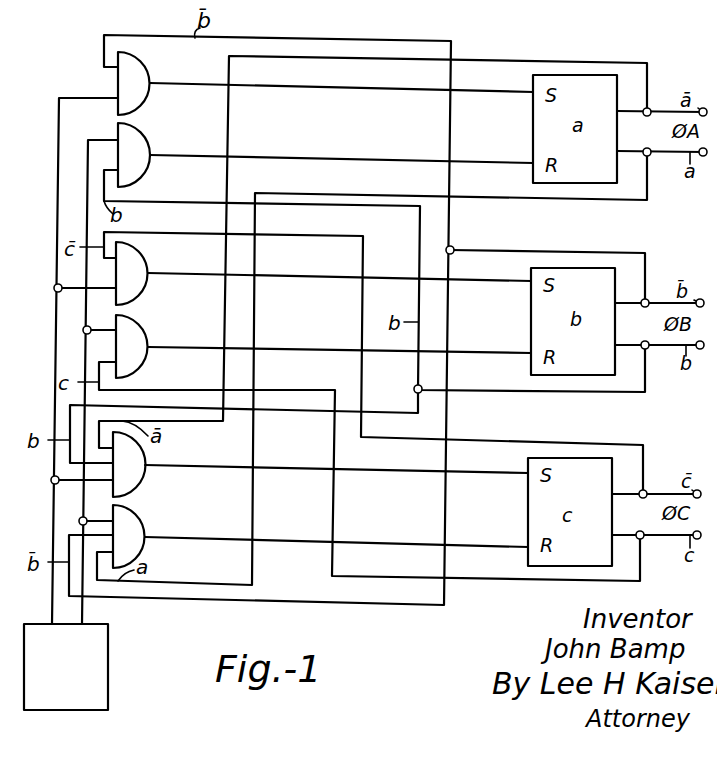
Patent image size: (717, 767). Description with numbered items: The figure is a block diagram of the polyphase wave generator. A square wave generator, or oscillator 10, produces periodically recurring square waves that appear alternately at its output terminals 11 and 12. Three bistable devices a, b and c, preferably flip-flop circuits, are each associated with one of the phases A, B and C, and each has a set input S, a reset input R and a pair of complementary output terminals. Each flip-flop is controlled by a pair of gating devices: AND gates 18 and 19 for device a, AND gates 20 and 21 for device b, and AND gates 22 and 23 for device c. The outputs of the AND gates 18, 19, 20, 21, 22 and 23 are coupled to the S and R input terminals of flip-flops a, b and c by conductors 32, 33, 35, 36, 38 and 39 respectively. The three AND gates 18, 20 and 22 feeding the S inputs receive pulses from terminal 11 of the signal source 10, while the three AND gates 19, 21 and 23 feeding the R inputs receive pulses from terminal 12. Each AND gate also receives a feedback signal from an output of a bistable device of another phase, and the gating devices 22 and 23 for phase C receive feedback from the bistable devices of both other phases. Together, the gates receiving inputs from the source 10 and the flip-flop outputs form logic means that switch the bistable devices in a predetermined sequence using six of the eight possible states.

The square wave generator 10 is at (82, 675).
The output terminal 11 is at (50, 623).
The output terminal 12 is at (85, 623).
The AND gate 18 is at (148, 70).
The AND gate 19 is at (146, 142).
The AND gate 20 is at (145, 262).
The AND gate 21 is at (143, 336).
The AND gate 22 is at (143, 475).
The AND gate 23 is at (143, 528).
The conductor 32 is at (311, 88).
The conductor 33 is at (353, 160).
The conductor 35 is at (286, 281).
The conductor 36 is at (309, 353).
The conductor 38 is at (272, 470).
The conductor 39 is at (294, 541).